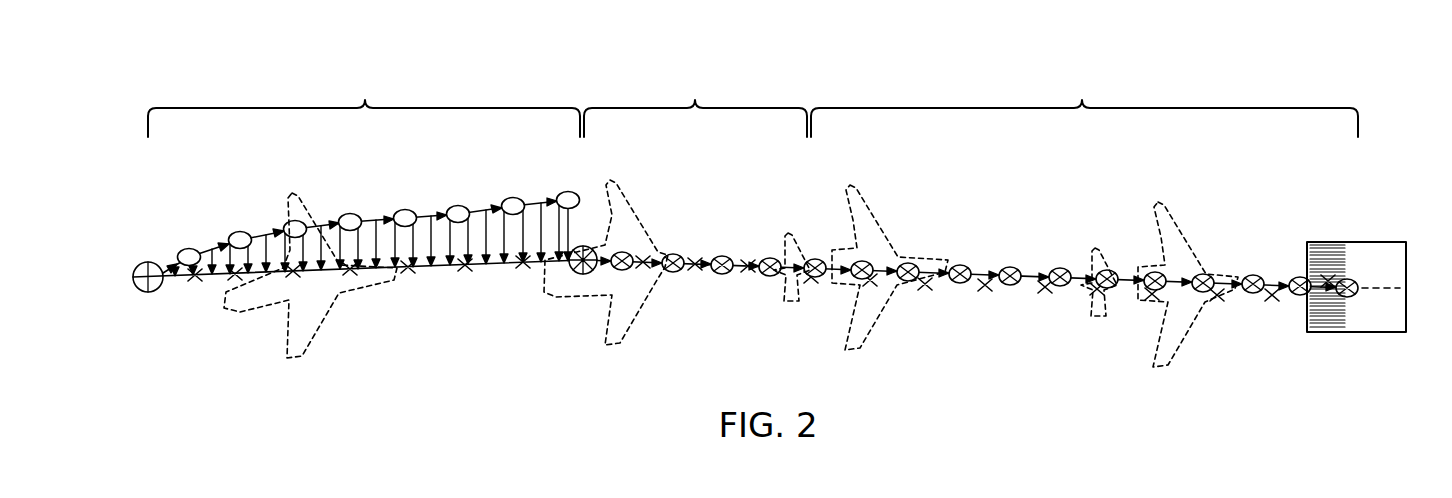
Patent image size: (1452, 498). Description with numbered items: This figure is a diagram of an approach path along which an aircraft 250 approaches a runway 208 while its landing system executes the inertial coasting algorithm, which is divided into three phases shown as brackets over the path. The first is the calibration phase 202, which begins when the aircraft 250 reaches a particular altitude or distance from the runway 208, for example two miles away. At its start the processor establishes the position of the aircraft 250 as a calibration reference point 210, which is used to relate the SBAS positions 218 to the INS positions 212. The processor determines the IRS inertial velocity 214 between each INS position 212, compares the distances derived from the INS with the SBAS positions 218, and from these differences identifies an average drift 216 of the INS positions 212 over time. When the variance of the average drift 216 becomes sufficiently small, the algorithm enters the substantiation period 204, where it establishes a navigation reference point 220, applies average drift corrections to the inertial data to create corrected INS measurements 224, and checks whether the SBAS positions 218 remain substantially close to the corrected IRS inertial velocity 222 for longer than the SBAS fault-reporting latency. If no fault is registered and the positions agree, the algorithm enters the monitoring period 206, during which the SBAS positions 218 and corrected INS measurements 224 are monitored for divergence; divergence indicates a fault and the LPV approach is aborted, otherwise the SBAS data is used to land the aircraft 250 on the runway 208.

The calibration phase 202 is at (365, 100).
The substantiation period 204 is at (695, 100).
The monitoring period 206 is at (1082, 100).
The runway 208 is at (1356, 242).
The calibration reference point 210 is at (148, 262).
The INS position 212 is at (350, 213).
The IRS inertial velocity 214 is at (480, 210).
The average drift 216 is at (570, 226).
The SBAS position 218 is at (409, 273).
The navigation reference point 220 is at (583, 274).
The corrected IRS inertial velocity 222 is at (1133, 278).
The corrected INS measurement 224 is at (1154, 270).
The aircraft 250 is at (640, 303).